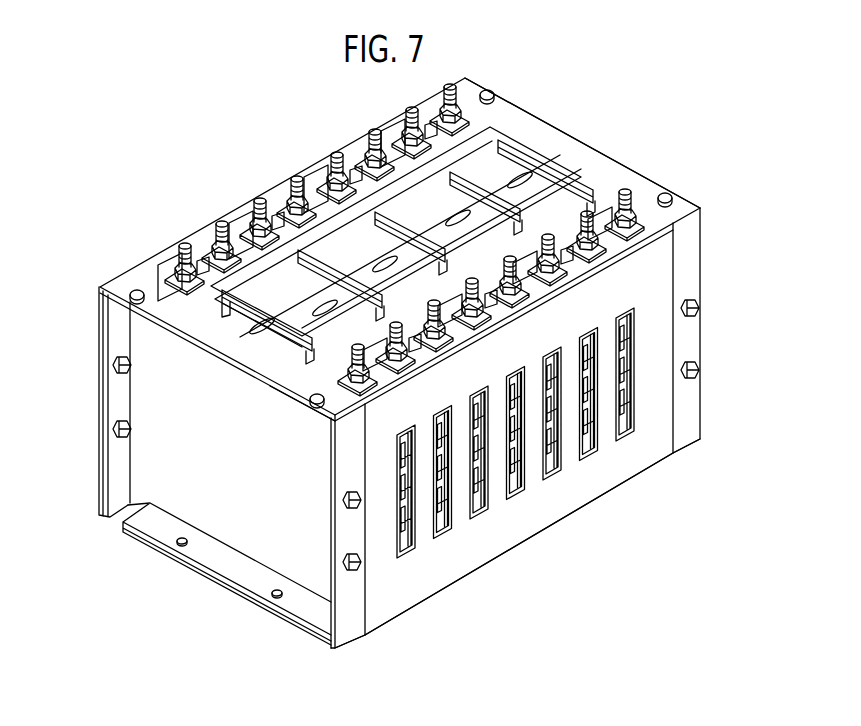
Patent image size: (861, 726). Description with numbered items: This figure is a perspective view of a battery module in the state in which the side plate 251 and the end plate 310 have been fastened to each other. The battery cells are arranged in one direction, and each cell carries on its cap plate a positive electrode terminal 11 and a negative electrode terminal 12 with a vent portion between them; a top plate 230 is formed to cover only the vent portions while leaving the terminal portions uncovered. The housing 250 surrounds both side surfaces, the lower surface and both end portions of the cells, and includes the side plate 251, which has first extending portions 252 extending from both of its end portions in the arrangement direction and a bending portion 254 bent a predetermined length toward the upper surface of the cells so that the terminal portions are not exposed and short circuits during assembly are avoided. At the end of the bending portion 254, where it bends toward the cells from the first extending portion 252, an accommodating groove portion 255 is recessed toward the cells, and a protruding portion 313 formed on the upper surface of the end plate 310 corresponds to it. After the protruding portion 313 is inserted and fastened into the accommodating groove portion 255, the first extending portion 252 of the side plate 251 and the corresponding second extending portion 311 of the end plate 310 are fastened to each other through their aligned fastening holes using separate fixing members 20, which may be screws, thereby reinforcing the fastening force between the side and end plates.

The positive electrode terminal 11 is at (452, 90).
The negative electrode terminal 12 is at (627, 192).
The fixing member 20 is at (112, 424).
The top plate 230 is at (530, 142).
The housing 250 is at (254, 181).
The side plate 251 is at (598, 486).
The first extending portion 252 is at (695, 413).
The bending portion 254 is at (684, 211).
The accommodating groove portion 255 is at (316, 406).
The end plate 310 is at (711, 337).
The second extending portion 311 is at (333, 532).
The protruding portion 313 is at (296, 399).